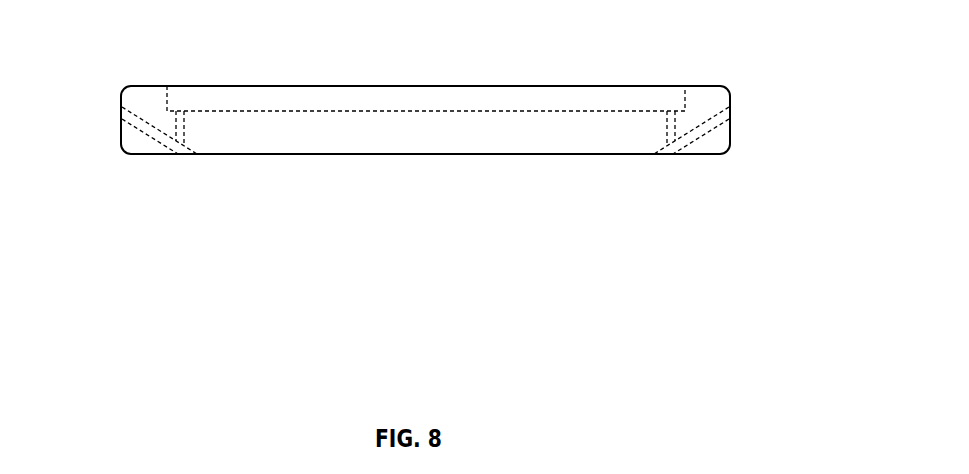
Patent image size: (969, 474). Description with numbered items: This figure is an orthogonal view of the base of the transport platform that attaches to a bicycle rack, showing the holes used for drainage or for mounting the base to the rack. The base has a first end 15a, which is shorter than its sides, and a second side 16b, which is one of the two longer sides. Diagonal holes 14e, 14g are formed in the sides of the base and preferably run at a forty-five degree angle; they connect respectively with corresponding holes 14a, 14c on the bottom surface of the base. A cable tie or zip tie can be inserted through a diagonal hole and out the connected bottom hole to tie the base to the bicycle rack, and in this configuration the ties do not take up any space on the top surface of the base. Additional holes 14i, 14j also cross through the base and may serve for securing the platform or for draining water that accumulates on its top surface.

The hole 14a is at (176, 154).
The hole 14c is at (674, 154).
The diagonal hole 14e is at (125, 118).
The diagonal hole 14g is at (723, 117).
The hole 14i is at (178, 121).
The hole 14j is at (673, 121).
The first end 15a is at (434, 154).
The second side 16b is at (730, 134).